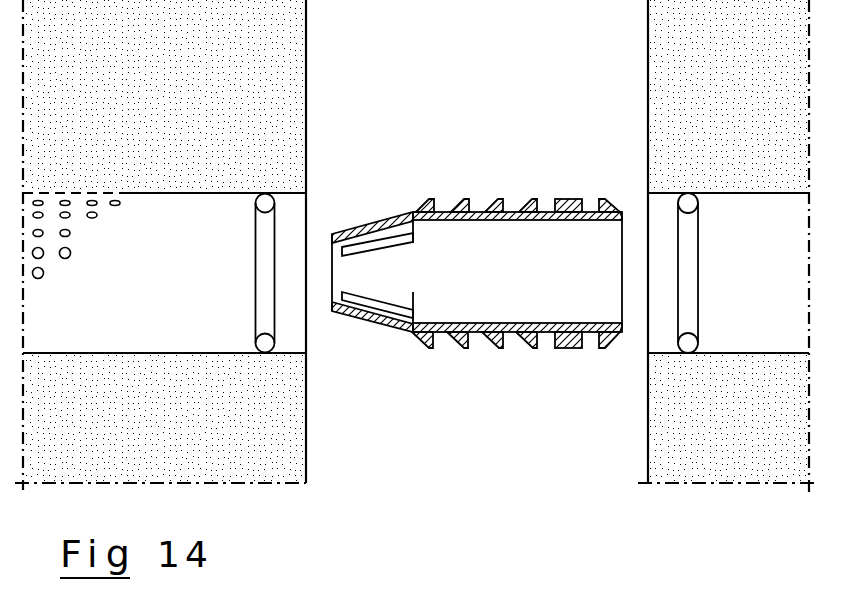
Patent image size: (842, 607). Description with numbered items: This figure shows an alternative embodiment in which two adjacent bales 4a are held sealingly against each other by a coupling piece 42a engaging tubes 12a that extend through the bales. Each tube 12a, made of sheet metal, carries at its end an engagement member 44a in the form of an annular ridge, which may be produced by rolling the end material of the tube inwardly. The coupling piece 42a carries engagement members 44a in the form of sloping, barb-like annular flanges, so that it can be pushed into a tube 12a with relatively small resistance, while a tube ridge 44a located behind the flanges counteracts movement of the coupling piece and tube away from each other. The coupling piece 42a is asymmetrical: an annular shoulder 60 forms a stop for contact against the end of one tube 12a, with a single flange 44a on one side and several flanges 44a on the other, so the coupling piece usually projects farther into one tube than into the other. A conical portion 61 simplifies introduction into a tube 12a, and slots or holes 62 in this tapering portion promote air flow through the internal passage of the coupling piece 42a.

The bale 4a is at (293, 62).
The tube 12a is at (223, 353).
The coupling piece 42a is at (477, 233).
The engagement members 44a is at (258, 208).
The annular shoulder 60 is at (566, 200).
The conical portion 61 is at (368, 320).
The slots or holes 62 is at (365, 247).